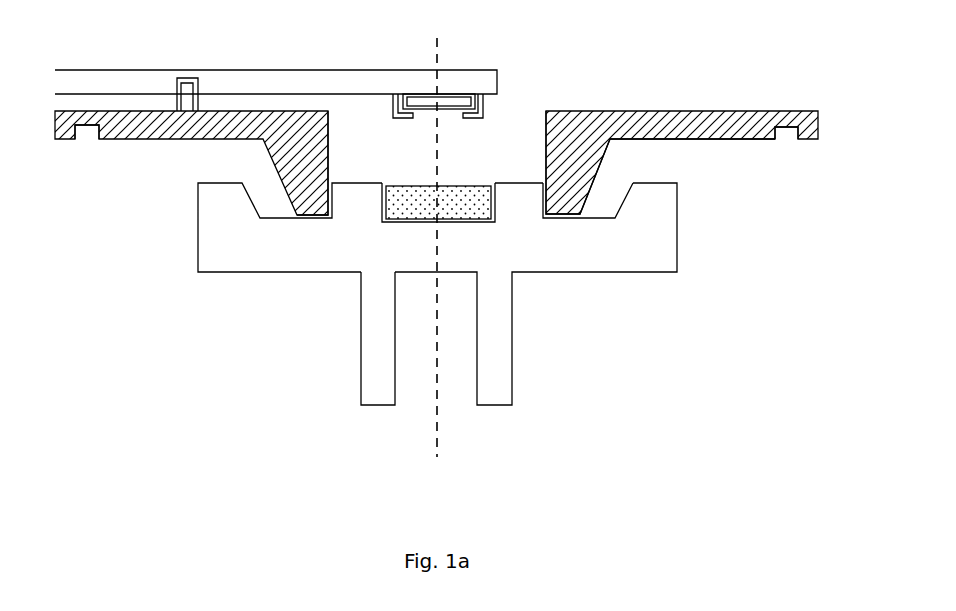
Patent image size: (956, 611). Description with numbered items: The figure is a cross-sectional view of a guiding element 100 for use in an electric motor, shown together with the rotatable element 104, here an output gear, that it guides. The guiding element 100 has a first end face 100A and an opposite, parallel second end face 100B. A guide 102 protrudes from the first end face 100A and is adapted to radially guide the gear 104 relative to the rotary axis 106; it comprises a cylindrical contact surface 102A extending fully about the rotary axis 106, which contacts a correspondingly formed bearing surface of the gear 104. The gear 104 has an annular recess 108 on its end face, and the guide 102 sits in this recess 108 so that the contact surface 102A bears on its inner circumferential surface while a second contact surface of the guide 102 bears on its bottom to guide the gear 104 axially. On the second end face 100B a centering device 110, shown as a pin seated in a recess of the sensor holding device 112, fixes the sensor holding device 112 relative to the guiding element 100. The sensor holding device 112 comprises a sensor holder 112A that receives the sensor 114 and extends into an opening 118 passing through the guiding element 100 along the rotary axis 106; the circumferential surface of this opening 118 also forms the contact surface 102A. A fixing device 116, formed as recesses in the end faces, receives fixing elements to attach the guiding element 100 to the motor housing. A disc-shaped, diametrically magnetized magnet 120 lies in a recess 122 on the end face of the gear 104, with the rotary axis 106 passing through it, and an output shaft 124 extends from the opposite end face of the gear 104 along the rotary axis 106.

The guiding element 100 is at (709, 96).
The first end face 100A is at (715, 140).
The second end face 100B is at (609, 112).
The guide 102 is at (285, 167).
The contact surface 102A is at (333, 160).
The rotatable element 104 is at (236, 286).
The rotary axis 106 is at (435, 435).
The annular recess 108 is at (603, 202).
The centering device 110 is at (193, 80).
The sensor holding device 112 is at (295, 83).
The sensor holder 112A is at (480, 100).
The sensor 114 is at (421, 102).
The fixing device 116 is at (88, 132).
The opening 118 is at (518, 135).
The magnet 120 is at (465, 210).
The recess 122 is at (380, 202).
The output shaft 124 is at (372, 350).